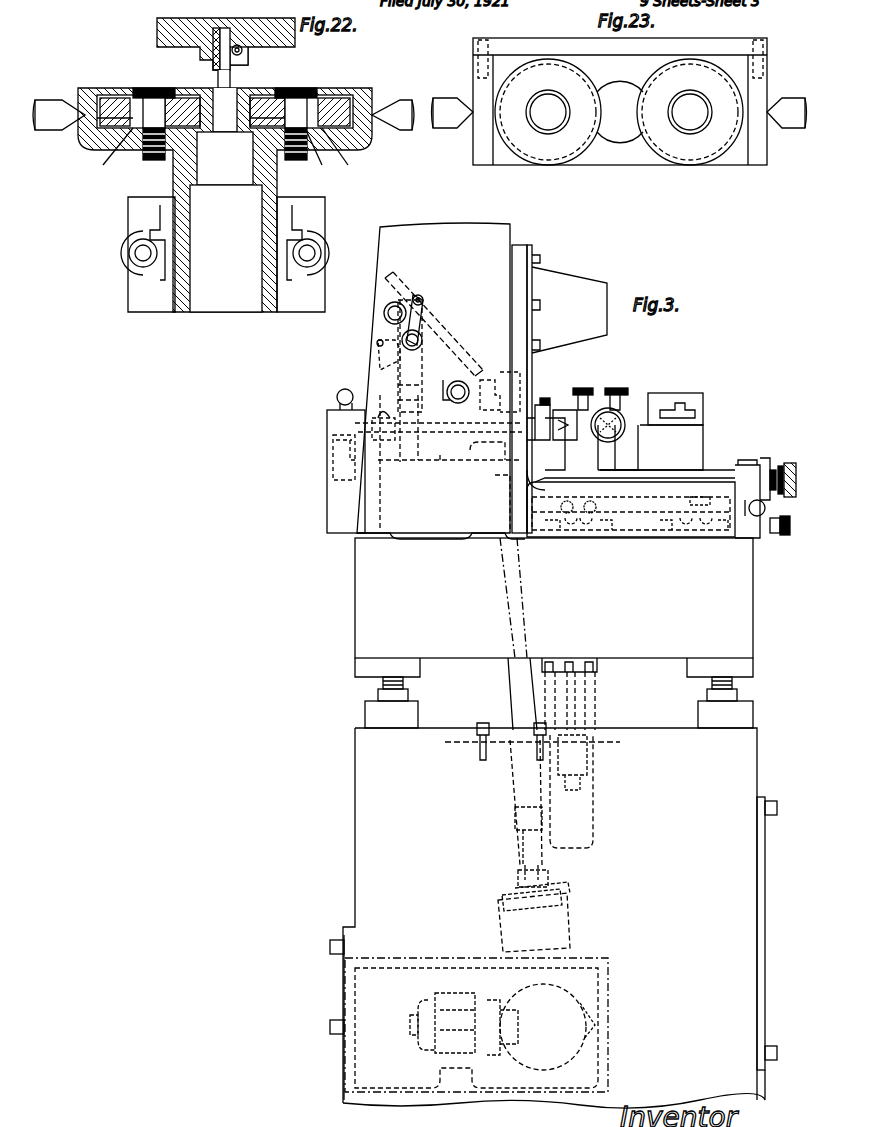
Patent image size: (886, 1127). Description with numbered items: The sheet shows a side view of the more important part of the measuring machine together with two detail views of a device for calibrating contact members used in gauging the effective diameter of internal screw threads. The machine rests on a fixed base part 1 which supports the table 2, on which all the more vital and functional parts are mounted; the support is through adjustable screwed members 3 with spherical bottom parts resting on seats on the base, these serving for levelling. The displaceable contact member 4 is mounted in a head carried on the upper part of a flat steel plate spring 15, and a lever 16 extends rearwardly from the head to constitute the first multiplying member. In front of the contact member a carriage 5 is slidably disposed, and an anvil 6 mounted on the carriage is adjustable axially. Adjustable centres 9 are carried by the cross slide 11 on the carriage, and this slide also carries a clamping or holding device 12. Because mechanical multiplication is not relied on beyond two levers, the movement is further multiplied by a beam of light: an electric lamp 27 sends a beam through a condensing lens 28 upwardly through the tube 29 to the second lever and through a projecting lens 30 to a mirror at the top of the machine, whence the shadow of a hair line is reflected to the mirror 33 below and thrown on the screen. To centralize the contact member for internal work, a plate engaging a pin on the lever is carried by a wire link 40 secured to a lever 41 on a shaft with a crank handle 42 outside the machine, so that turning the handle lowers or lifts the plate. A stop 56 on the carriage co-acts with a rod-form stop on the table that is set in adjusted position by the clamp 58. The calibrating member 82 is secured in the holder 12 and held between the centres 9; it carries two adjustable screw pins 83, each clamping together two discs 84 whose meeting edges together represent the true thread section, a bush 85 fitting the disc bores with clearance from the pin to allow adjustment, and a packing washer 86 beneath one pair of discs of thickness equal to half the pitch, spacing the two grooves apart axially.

In FIG. 3, the fixed base part 1 is at (447, 836).
In FIG. 3, the table 2 is at (748, 612).
In FIG. 3, the adjustable screwed members 3 is at (380, 690).
In FIG. 22, the displaceable contact member 4 is at (233, 100).
In FIG. 3, the displaceable contact member 4 is at (562, 412).
In FIG. 3, the carriage 5 is at (655, 488).
In FIG. 3, the anvil 6 is at (583, 400).
In FIG. 22, the adjustable centres 9 is at (50, 103).
In FIG. 23, the adjustable centres 9 is at (445, 108).
In FIG. 3, the adjustable centres 9 is at (616, 398).
In FIG. 3, the cross slide 11 is at (740, 465).
In FIG. 22, the clamping or holding device 12 is at (226, 248).
In FIG. 3, the clamping or holding device 12 is at (695, 432).
In FIG. 3, the plate spring 15 is at (560, 450).
In FIG. 3, the lever 16 is at (440, 381).
In FIG. 3, the electric lamp 27 is at (585, 1008).
In FIG. 3, the condensing lens 28 is at (565, 890).
In FIG. 3, the tube 29 is at (512, 683).
In FIG. 3, the projecting lens 30 is at (478, 380).
In FIG. 3, the mirror 33 is at (450, 340).
In FIG. 3, the wire link 40 is at (380, 368).
In FIG. 3, the lever 41 is at (400, 345).
In FIG. 3, the crank handle 42 is at (385, 325).
In FIG. 3, the stop 56 is at (765, 508).
In FIG. 3, the clamp 58 is at (790, 526).
In FIG. 22, the member 82 is at (192, 160).
In FIG. 23, the member 82 is at (485, 133).
In FIG. 22, the adjustable screw pins 83 is at (152, 108).
In FIG. 23, the adjustable screw pins 83 is at (550, 118).
In FIG. 22, the discs 84 is at (115, 100).
In FIG. 23, the discs 84 is at (558, 148).
In FIG. 22, the bush 85 is at (225, 153).
In FIG. 22, the packing washer 86 is at (319, 154).